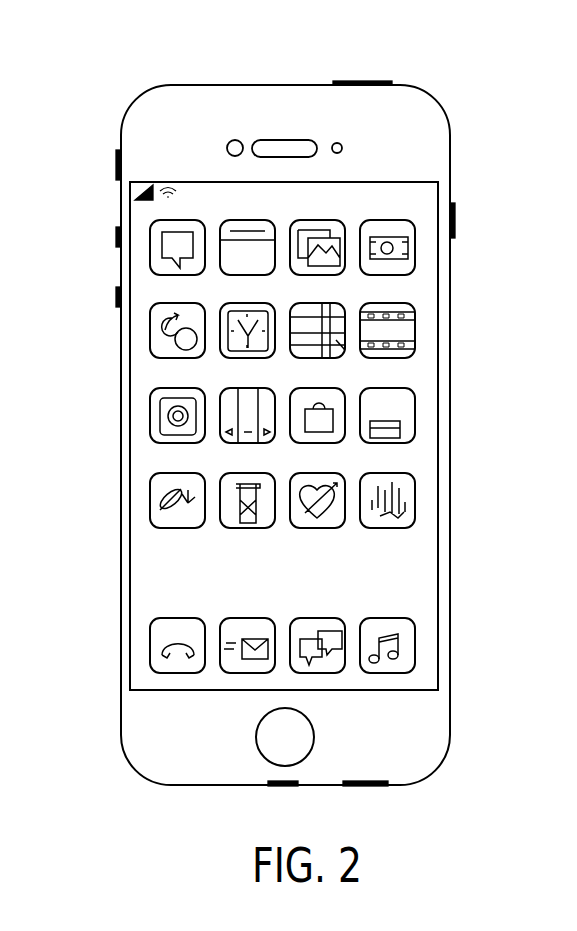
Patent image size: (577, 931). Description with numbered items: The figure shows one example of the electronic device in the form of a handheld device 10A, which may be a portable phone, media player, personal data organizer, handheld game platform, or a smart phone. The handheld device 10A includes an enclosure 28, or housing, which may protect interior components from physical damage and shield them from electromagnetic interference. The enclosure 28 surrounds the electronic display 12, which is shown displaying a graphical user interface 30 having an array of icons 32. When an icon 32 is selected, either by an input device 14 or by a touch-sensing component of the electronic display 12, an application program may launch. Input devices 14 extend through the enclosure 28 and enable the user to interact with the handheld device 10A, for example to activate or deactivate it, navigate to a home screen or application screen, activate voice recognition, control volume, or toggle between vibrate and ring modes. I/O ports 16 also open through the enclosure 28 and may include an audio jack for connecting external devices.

The handheld device 10A is at (108, 73).
The electronic display 12 is at (440, 562).
The input devices 14 is at (362, 81).
The I/O ports 16 is at (171, 786).
The enclosure 28 is at (452, 172).
The graphical user interface 30 is at (412, 380).
The icon 32 is at (318, 533).